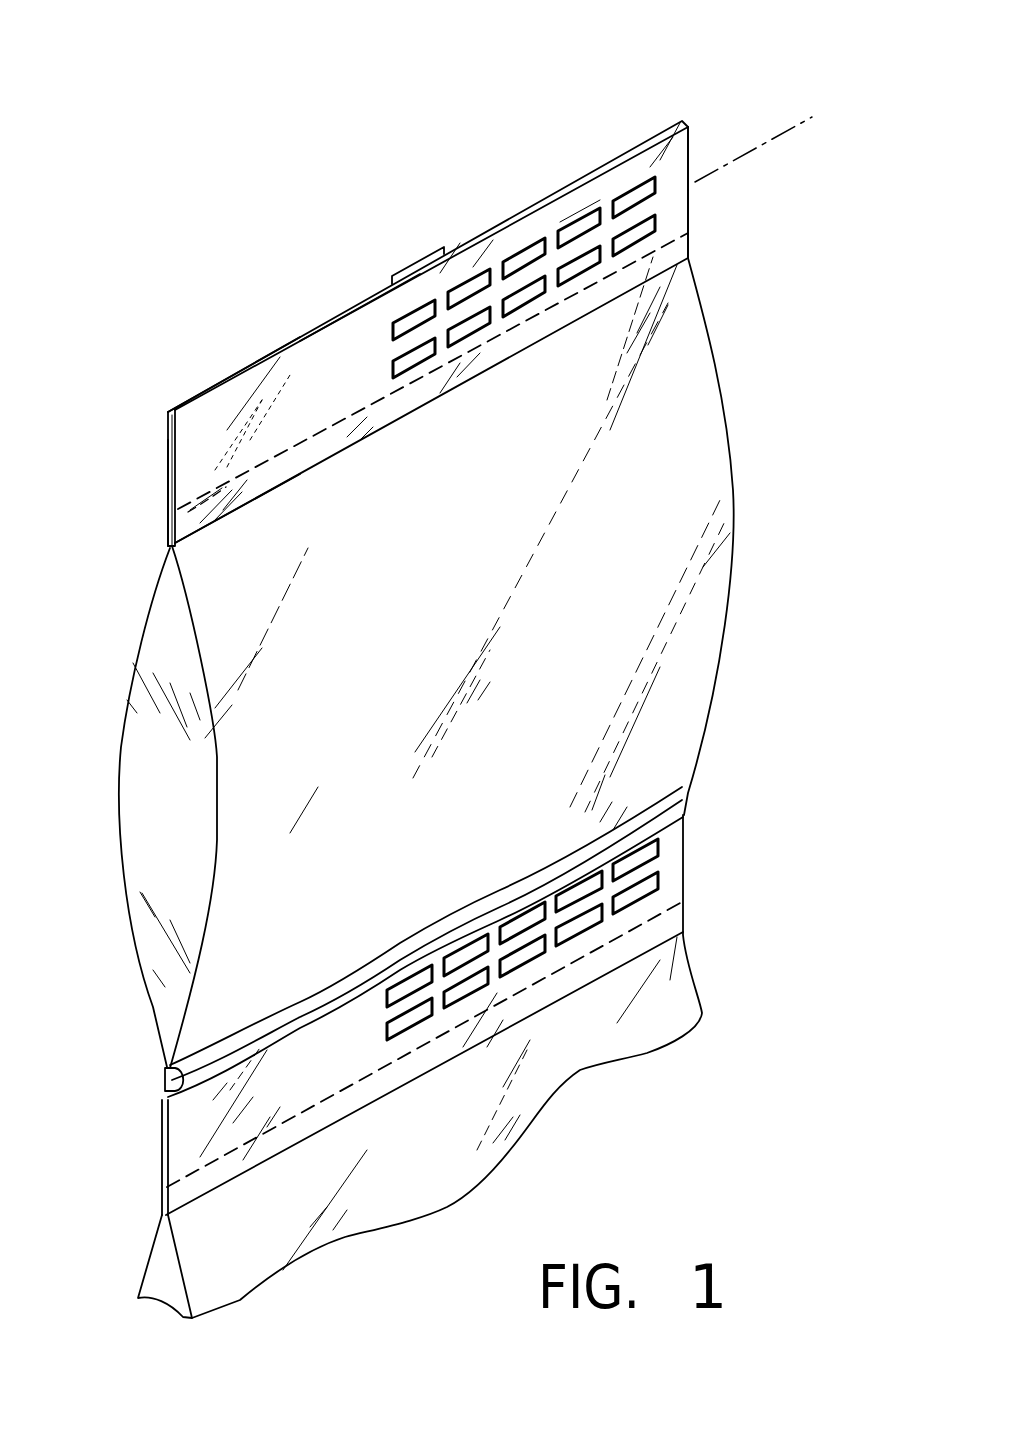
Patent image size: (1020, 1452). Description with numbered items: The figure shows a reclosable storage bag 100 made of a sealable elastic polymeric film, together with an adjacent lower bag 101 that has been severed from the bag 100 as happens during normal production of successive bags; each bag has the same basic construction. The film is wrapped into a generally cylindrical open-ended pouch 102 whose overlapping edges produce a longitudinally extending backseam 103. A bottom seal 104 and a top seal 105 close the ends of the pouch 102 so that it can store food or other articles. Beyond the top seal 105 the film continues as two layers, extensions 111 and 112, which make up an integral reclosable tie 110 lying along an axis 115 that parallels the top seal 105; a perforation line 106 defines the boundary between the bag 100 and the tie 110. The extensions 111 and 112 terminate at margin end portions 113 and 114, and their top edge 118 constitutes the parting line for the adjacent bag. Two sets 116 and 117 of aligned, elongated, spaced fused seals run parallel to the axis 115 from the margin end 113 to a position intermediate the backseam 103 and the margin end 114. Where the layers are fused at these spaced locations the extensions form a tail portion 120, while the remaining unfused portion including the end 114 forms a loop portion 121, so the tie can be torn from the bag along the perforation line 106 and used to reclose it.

The bag 100 is at (797, 437).
The lower bag 101 is at (748, 957).
The pouch 102 is at (593, 628).
The backseam 103 is at (420, 265).
The bottom seal 104 is at (167, 1093).
The top seal 105 is at (195, 526).
The perforation line 106 is at (218, 489).
The reclosable tie 110 is at (205, 420).
The extension 111 is at (690, 150).
The extension 112 is at (205, 420).
The margin end portion 113 is at (690, 197).
The margin end portion 114 is at (170, 457).
The axis 115 is at (772, 139).
The set of fused seals 116 is at (530, 302).
The set of fused seals 117 is at (530, 247).
The top edge 118 is at (270, 357).
The tail portion 120 is at (580, 200).
The loop portion 121 is at (360, 300).